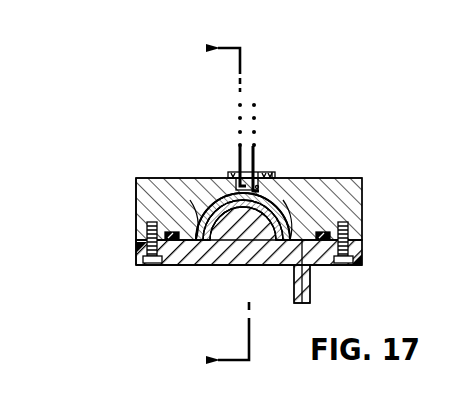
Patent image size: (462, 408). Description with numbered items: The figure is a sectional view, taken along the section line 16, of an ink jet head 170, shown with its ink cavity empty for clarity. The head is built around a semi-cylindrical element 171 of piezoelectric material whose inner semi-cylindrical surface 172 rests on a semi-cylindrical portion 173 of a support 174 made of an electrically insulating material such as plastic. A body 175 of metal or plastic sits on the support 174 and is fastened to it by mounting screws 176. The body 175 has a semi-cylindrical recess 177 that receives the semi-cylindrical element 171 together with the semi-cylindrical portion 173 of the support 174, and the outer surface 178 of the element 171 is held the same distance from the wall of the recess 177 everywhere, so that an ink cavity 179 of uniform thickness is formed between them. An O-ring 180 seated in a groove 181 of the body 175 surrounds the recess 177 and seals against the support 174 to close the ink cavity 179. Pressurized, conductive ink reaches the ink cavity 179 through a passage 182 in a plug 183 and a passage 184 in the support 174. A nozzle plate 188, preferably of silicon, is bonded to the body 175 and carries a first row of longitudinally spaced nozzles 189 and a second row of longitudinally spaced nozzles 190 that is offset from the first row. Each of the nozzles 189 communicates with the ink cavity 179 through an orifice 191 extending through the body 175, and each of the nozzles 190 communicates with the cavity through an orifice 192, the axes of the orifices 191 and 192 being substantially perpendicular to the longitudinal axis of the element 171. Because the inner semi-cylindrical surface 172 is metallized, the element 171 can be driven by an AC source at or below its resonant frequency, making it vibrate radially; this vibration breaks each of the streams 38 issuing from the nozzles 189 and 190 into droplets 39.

The section line 16 is at (227, 206).
The streams 38 is at (258, 152).
The droplets 39 is at (256, 119).
The ink jet head 170 is at (112, 195).
The semi-cylindrical element 171 is at (284, 173).
The inner semi-cylindrical surface 172 is at (222, 253).
The semi-cylindrical portion 173 is at (234, 258).
The support 174 is at (131, 251).
The body 175 is at (364, 192).
The mounting screws 176 is at (351, 265).
The semi-cylindrical recess 177 is at (264, 172).
The outer surface 178 is at (182, 200).
The ink cavity 179 is at (166, 262).
The O-ring 180 is at (313, 264).
The groove 181 is at (165, 196).
The passage 182 is at (294, 300).
The plug 183 is at (311, 297).
The passage 184 is at (280, 262).
The nozzle plate 188 is at (276, 175).
The nozzles 189 is at (262, 172).
The nozzles 190 is at (231, 174).
The orifice 191 is at (294, 199).
The orifice 192 is at (208, 203).